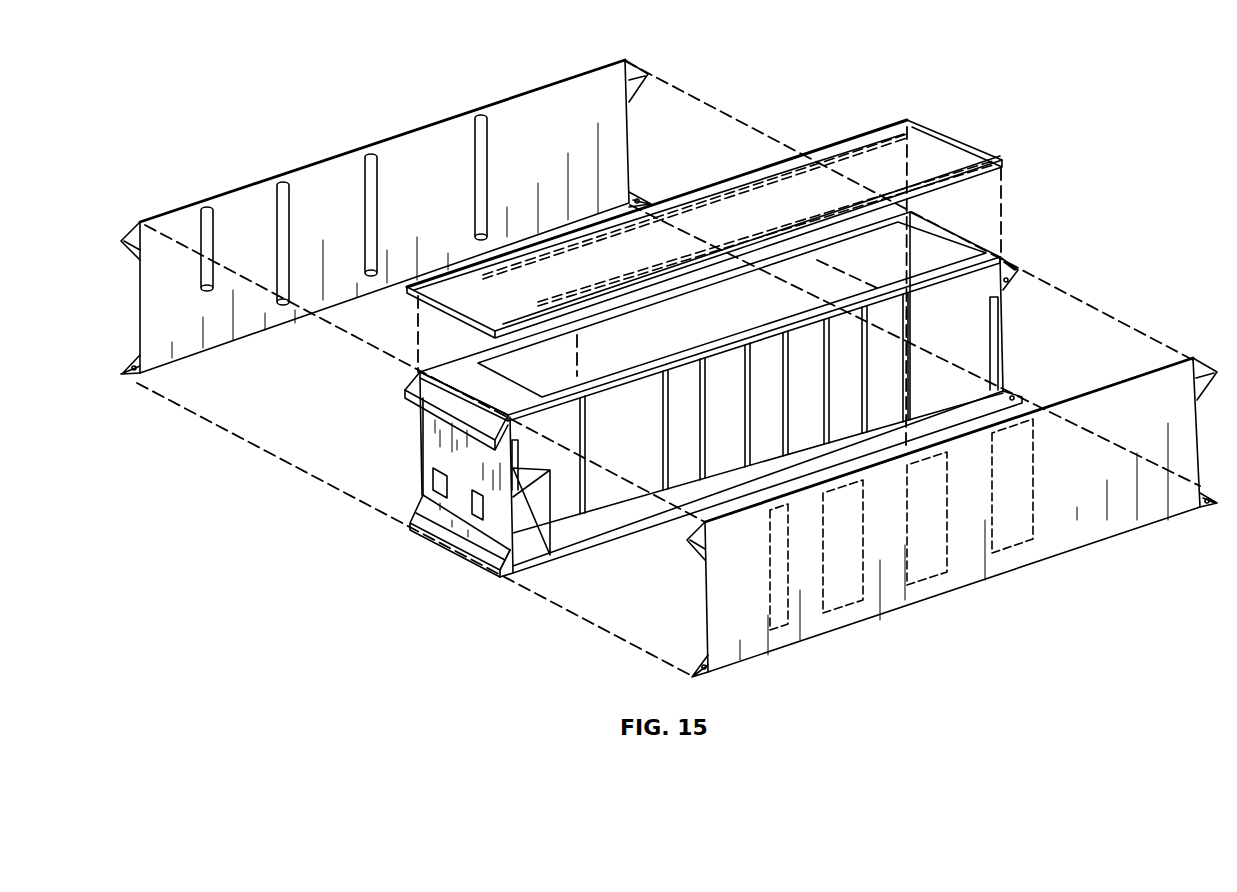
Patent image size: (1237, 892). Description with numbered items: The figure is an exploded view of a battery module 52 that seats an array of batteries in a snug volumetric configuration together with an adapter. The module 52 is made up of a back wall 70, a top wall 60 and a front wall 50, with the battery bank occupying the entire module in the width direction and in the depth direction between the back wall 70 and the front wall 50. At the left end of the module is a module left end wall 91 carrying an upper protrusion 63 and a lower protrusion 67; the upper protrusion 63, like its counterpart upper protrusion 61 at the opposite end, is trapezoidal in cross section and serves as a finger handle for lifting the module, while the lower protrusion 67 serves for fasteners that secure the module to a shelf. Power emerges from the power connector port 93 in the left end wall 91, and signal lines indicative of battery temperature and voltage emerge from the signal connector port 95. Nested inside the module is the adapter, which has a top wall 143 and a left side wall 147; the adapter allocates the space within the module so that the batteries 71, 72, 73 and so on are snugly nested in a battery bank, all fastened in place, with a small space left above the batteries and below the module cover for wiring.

The battery module 52 is at (985, 131).
The back wall 70 is at (413, 143).
The top wall 60 is at (930, 153).
The top wall 143 is at (892, 262).
The upper protrusion 63 is at (412, 398).
The upper protrusion 61 is at (1003, 278).
The left side wall 147 is at (613, 457).
The battery 71 is at (673, 478).
The battery 72 is at (718, 462).
The battery 73 is at (780, 445).
The module left end wall 91 is at (433, 447).
The power connector port 93 is at (433, 482).
The signal wire connector port 95 is at (473, 512).
The lower protrusion 67 is at (500, 553).
The front wall 50 is at (967, 567).